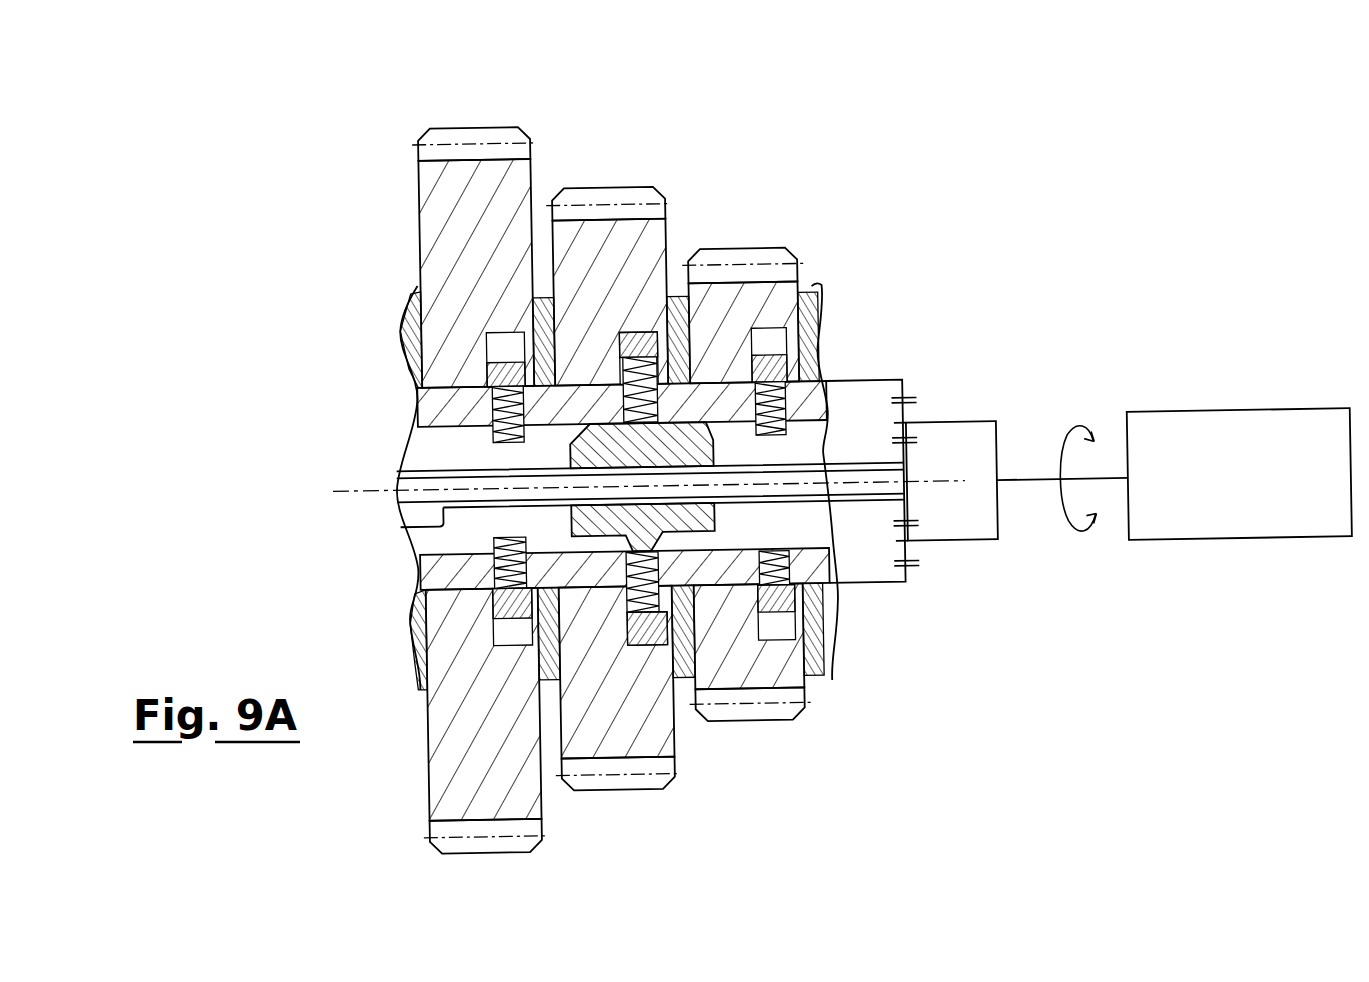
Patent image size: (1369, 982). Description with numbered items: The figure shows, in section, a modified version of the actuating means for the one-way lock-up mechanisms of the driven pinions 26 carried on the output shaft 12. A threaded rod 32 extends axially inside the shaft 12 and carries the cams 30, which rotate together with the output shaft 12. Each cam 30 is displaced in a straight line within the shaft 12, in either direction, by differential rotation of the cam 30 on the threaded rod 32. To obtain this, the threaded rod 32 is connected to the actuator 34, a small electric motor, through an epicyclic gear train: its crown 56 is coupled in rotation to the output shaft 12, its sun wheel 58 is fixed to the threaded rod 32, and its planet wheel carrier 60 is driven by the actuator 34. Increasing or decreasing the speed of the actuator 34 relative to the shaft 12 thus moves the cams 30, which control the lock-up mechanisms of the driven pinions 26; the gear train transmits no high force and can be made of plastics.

The output shaft 12 is at (840, 404).
The driven pinion 26 is at (497, 138).
The cam 30 is at (571, 443).
The threaded rod 32 is at (400, 523).
The actuator 34 is at (1262, 420).
The crown 56 is at (899, 385).
The sun wheel 58 is at (905, 462).
The gear box 60 is at (997, 521).